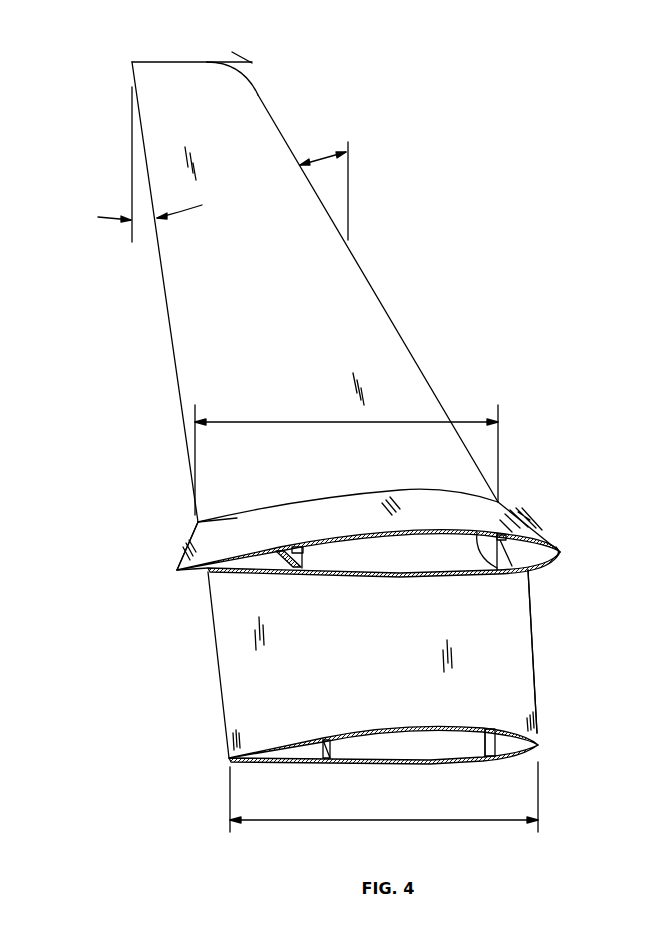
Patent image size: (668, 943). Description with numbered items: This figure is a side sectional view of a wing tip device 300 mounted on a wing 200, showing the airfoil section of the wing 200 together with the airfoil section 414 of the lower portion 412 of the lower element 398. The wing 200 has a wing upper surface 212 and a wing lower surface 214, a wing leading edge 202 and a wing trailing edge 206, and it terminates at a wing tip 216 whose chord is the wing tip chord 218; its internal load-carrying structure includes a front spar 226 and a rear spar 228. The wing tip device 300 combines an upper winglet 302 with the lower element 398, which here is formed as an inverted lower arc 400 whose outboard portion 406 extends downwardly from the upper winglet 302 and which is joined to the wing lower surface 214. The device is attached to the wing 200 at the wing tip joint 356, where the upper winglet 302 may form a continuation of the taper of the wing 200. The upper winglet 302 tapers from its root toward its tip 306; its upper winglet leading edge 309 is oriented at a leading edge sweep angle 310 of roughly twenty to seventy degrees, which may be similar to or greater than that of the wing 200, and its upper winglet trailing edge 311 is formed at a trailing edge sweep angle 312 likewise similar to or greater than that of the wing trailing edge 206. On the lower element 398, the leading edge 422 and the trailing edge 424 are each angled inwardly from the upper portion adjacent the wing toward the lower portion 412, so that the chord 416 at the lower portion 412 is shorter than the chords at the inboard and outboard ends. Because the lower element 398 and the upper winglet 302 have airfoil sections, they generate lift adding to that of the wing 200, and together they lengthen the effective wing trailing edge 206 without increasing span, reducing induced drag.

The wing 200 is at (543, 528).
The wing leading edge 202 is at (561, 551).
The wing trailing edge 206 is at (175, 570).
The wing upper surface 212 is at (480, 522).
The wing lower surface 214 is at (540, 570).
The wing tip 216 is at (196, 535).
The wing tip chord 218 is at (307, 420).
The front spar 226 is at (530, 605).
The rear spar 228 is at (305, 552).
The wing tip device 300 is at (433, 120).
The upper winglet 302 is at (260, 92).
The tip 306 is at (152, 60).
The upper winglet leading edge 309 is at (357, 262).
The leading edge sweep angle 310 is at (320, 150).
The upper winglet trailing edge 311 is at (167, 297).
The trailing edge sweep angle 312 is at (98, 217).
The wing tip joint 356 is at (237, 518).
The lower element 398 is at (222, 685).
The lower arc 400 is at (542, 707).
The outboard portion 406 is at (535, 657).
The lower portion 412 is at (447, 763).
The airfoil section 414 is at (367, 760).
The chord 416 is at (328, 820).
The leading edge 422 is at (537, 733).
The trailing edge 424 is at (225, 712).